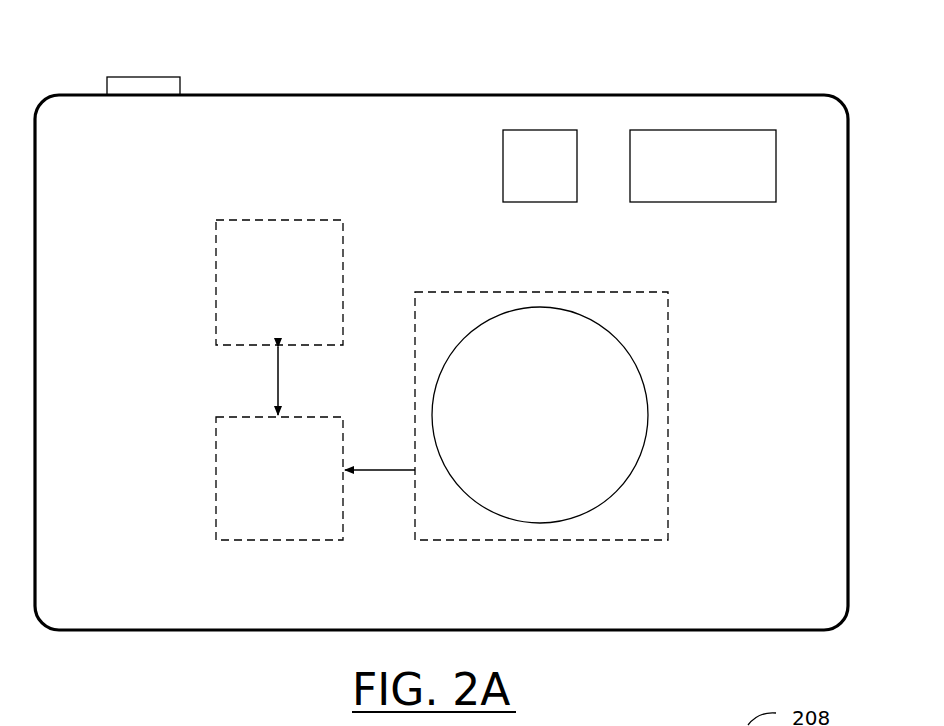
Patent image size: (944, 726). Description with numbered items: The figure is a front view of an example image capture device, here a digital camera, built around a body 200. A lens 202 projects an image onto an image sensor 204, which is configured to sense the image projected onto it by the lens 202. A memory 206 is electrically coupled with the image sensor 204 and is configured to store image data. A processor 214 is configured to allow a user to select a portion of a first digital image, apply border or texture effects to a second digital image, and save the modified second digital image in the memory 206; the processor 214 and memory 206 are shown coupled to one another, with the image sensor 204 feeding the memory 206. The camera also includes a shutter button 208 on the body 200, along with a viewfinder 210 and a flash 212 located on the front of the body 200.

The body 200 is at (441, 362).
The lens 202 is at (540, 415).
The image sensor 204 is at (672, 361).
The memory 206 is at (279, 478).
The shutter button 208 is at (128, 74).
The viewfinder 210 is at (540, 166).
The flash 212 is at (703, 166).
The processor 214 is at (279, 282).